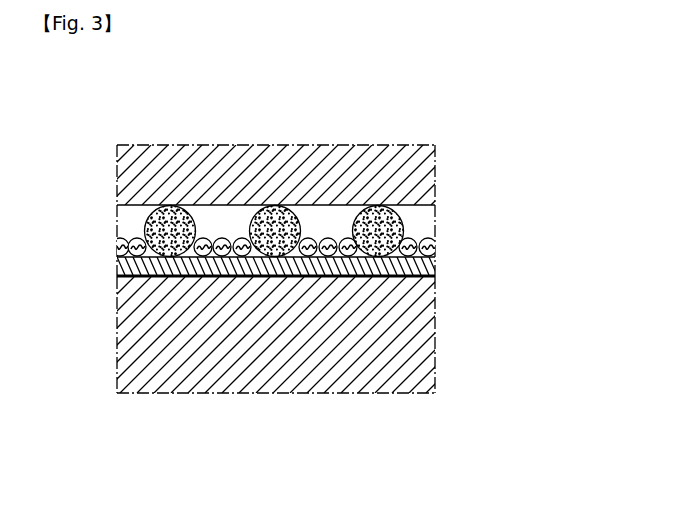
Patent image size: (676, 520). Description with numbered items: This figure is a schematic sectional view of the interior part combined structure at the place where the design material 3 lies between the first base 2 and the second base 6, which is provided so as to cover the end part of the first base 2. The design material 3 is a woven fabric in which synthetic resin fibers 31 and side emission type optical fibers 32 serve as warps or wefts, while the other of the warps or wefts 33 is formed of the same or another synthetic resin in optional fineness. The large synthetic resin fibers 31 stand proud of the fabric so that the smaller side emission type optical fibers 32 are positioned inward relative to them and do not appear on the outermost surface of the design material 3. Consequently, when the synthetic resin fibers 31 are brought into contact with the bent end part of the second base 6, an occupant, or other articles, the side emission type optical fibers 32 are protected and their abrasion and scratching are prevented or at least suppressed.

The first base 2 is at (435, 325).
The design material 3 is at (440, 203).
The second base 6 is at (435, 172).
The synthetic resin fibers 31 is at (167, 206).
The side emission type optical fibers 32 is at (203, 238).
The other of the warps or wefts 33 is at (119, 268).